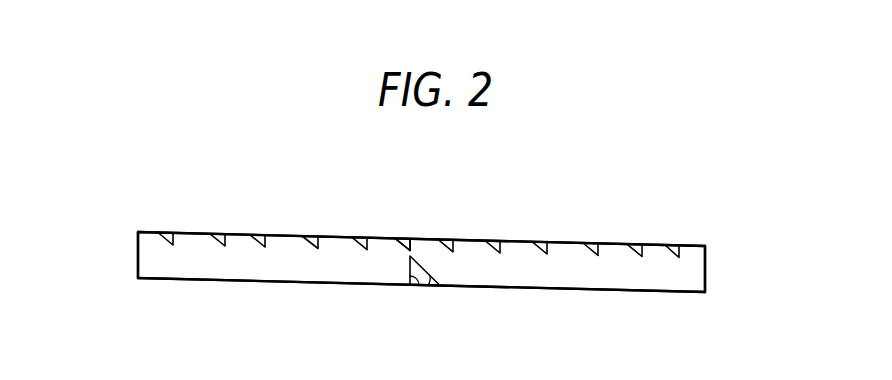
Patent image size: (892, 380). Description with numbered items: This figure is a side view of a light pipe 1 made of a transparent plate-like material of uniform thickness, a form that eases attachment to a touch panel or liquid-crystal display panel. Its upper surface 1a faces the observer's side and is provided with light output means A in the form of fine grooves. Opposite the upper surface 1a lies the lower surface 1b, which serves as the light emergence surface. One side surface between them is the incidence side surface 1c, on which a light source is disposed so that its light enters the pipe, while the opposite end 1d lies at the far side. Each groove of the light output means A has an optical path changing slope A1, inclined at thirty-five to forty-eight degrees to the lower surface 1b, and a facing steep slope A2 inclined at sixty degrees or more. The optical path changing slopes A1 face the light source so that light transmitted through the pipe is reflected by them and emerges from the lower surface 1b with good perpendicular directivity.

The light pipe 1 is at (624, 238).
The upper surface 1a is at (528, 239).
The lower surface 1b is at (545, 290).
The incidence side surface 1c is at (138, 252).
The opposite end 1d is at (705, 270).
The light output means A is at (407, 239).
The optical path changing slope A1 is at (398, 238).
The steep slope A2 is at (412, 240).